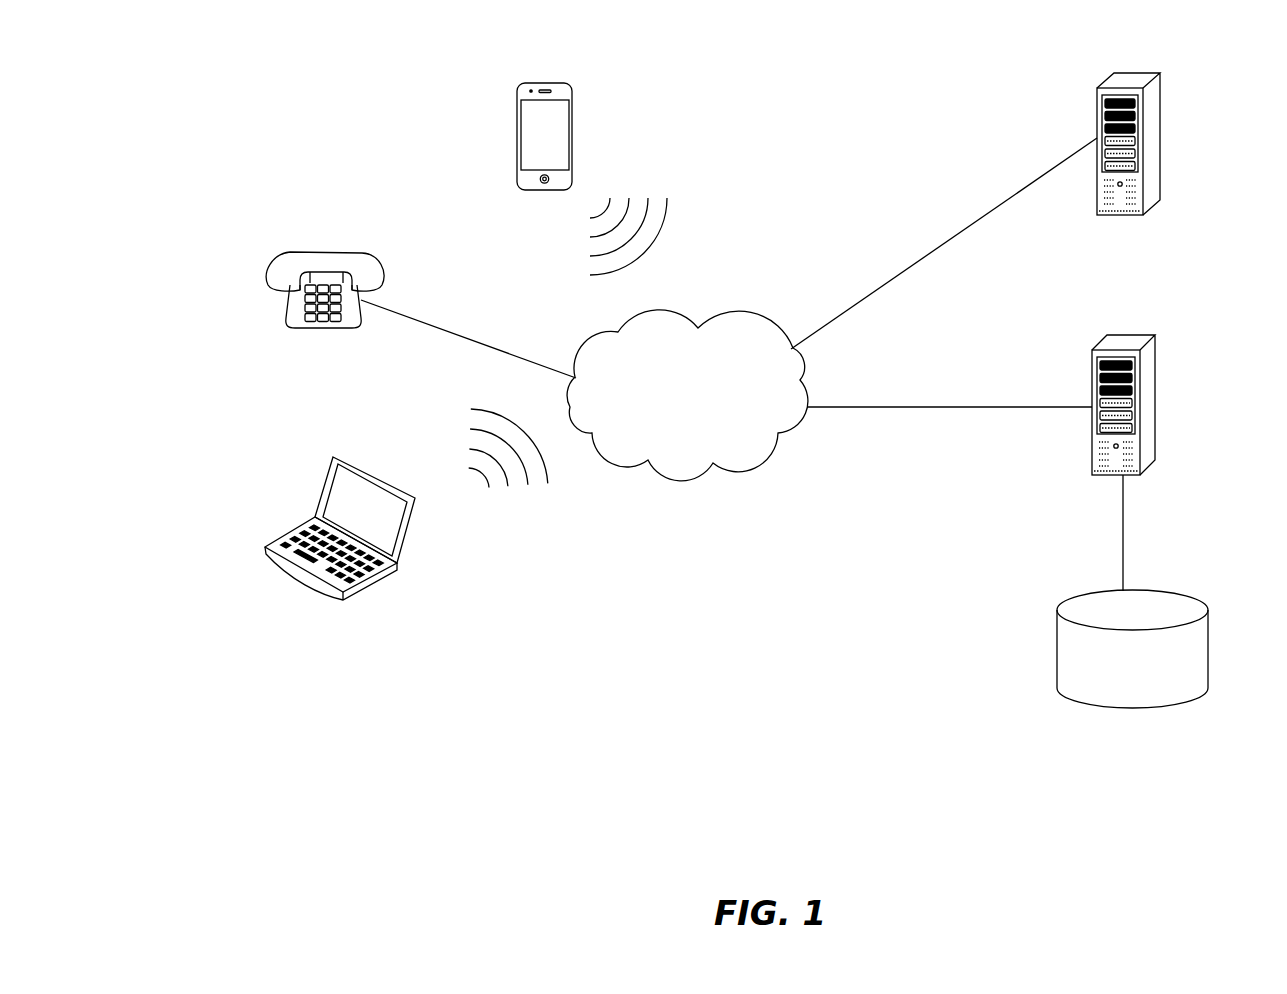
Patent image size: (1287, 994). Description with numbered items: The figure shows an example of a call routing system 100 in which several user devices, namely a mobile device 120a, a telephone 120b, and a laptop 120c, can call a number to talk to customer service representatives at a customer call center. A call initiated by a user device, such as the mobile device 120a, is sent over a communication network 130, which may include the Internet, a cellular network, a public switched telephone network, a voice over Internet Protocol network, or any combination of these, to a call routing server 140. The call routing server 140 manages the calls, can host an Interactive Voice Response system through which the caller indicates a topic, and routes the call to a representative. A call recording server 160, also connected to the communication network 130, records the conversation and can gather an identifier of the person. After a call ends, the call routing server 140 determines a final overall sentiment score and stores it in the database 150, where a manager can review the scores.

The call routing system 100 is at (238, 155).
The mobile device 120a is at (560, 84).
The user device 120b is at (374, 259).
The user device 120c is at (412, 533).
The communication network 130 is at (750, 313).
The call routing server 140 is at (1136, 335).
The database 150 is at (1190, 594).
The call recording server 160 is at (1141, 73).